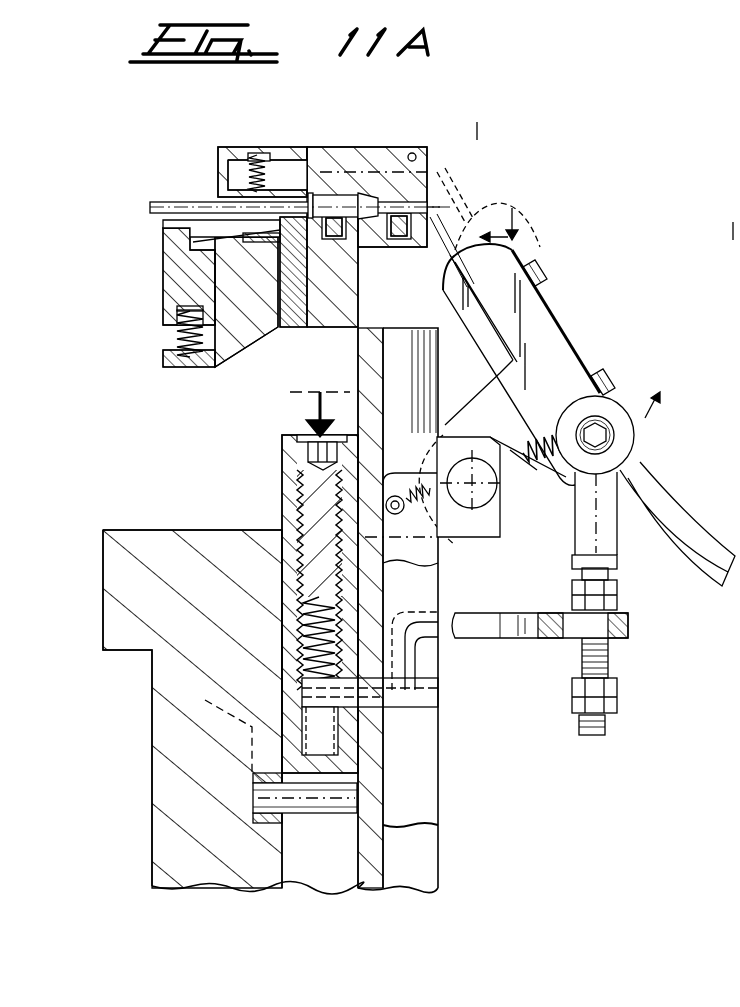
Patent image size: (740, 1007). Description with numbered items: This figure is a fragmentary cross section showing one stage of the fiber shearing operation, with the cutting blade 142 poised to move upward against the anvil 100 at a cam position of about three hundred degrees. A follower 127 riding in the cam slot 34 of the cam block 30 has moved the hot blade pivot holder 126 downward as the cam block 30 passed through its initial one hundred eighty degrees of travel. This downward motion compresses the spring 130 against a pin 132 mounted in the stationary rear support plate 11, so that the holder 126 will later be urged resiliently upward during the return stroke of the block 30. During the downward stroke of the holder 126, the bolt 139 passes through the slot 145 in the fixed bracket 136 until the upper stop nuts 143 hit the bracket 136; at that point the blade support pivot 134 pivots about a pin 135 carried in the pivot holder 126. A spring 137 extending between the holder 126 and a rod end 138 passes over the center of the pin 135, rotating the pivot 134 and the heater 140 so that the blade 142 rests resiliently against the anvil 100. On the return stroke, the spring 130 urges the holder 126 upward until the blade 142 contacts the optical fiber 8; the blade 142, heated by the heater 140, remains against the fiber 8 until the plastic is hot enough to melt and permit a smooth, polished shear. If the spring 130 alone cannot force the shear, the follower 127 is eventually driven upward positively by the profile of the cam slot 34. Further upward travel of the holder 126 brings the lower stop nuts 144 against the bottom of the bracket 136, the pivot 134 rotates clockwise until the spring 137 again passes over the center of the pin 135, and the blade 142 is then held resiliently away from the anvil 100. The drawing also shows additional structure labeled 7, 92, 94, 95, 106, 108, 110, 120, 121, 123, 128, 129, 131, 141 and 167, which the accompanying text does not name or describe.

The shaft 7 is at (150, 203).
The fiber 8 is at (440, 207).
The stationary rear support plate 11 is at (383, 824).
The cam block 30 is at (152, 775).
The cam slot 34 is at (211, 725).
The housing block 92 is at (385, 145).
The cap 94 is at (228, 190).
The spring 95 is at (253, 172).
The anvil 100 is at (325, 310).
The seal 106 is at (336, 214).
The pin 108 is at (327, 313).
The insert 110 is at (232, 345).
The clamp block 120 is at (165, 295).
The plate 121 is at (165, 225).
The spring 123 is at (180, 333).
The hot blade pivot holder 126 is at (282, 510).
The follower 127 is at (265, 818).
The plunger 128 is at (323, 727).
The screw 129 is at (297, 463).
The spring 130 is at (333, 623).
The sleeve 131 is at (350, 738).
The pin 132 is at (373, 690).
The blade support pivot 134 is at (548, 488).
The pin 135 is at (472, 500).
The fixed bracket 136 is at (507, 620).
The spring 137 is at (545, 425).
The rod end 138 is at (628, 405).
The bolt 139 is at (605, 660).
The heater 140 is at (548, 320).
The spring fingers 141 is at (660, 520).
The cutting blade 142 is at (443, 253).
The stop nuts 143 is at (618, 600).
The lower stop nuts 144 is at (615, 700).
The slot 145 is at (565, 643).
The plate 167 is at (175, 368).